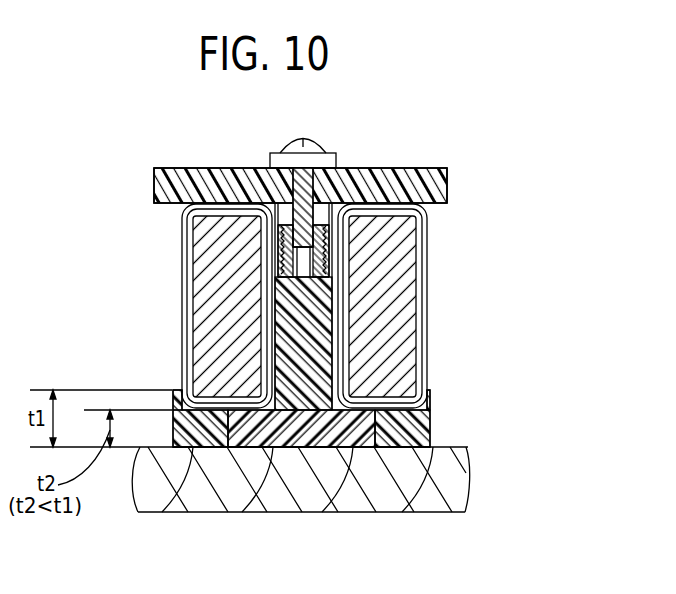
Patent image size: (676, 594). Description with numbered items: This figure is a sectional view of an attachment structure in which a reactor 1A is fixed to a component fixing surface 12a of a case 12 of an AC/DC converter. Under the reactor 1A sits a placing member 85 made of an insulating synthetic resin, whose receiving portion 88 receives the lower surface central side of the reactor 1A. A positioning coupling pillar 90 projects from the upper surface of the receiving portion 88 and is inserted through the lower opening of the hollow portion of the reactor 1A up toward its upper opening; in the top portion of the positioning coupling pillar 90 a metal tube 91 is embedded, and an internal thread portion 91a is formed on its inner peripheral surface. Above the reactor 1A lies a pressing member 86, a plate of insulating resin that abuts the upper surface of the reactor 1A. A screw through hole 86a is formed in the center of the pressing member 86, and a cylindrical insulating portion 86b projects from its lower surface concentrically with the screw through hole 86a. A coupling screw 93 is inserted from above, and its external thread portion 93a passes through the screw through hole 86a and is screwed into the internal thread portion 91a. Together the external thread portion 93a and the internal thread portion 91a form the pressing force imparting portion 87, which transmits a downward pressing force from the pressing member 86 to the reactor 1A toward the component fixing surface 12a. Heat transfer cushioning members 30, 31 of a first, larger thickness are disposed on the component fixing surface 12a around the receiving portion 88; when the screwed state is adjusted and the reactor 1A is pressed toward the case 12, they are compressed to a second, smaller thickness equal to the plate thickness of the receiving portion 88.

The pressing member 86 is at (402, 168).
The pressing force imparting portion 87 is at (222, 186).
The screw through hole 86a is at (282, 200).
The cylindrical insulating portion 86b is at (298, 231).
The coupling screw 93 is at (296, 150).
The external thread portion 93a is at (325, 195).
The metal tube 91 is at (325, 243).
The internal thread portion 91a is at (318, 272).
The positioning coupling pillar 90 is at (300, 348).
The reactor 1A is at (385, 293).
The receiving portion 88 is at (240, 447).
The heat transfer cushioning member 30 is at (192, 447).
The heat transfer cushioning member 31 is at (398, 447).
The placing member 85 is at (318, 448).
The case 12 is at (455, 487).
The component fixing surface 12a is at (450, 447).